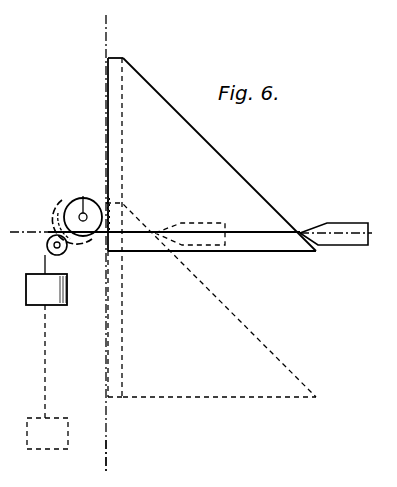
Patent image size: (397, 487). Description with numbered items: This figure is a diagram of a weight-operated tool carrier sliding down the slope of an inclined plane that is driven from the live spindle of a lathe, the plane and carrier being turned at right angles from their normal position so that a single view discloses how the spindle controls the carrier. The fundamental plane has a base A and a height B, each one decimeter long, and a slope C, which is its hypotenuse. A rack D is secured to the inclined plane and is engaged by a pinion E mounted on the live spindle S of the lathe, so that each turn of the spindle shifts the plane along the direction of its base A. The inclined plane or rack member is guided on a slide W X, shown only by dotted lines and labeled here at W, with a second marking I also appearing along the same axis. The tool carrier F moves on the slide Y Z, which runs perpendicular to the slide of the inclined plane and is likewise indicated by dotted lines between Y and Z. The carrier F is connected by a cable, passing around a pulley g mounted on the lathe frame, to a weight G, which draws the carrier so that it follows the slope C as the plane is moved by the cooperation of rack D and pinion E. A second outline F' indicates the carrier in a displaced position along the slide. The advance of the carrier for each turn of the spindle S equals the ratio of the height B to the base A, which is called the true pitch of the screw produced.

The vertical axis line I is at (105, 243).
The slide W is at (92, 456).
The rack D is at (106, 157).
The base of the inclined plane A is at (125, 172).
The slope of the inclined plane C is at (227, 157).
The height of the inclined plane B is at (236, 253).
The slide Y is at (152, 224).
The live spindle S is at (83, 208).
The pinion E is at (68, 206).
The pulley g is at (47, 246).
The weight G is at (67, 293).
The tool carrier F is at (190, 221).
The pointer (solid position) F' is at (334, 224).
The slide Z is at (341, 233).